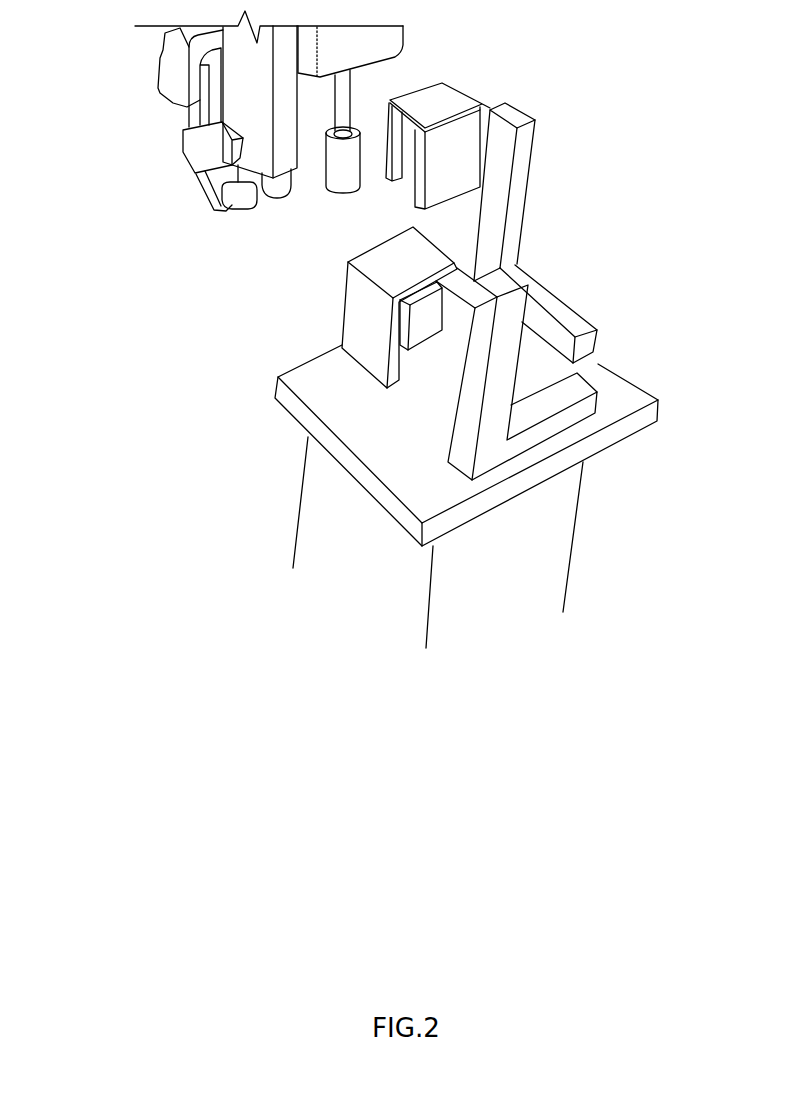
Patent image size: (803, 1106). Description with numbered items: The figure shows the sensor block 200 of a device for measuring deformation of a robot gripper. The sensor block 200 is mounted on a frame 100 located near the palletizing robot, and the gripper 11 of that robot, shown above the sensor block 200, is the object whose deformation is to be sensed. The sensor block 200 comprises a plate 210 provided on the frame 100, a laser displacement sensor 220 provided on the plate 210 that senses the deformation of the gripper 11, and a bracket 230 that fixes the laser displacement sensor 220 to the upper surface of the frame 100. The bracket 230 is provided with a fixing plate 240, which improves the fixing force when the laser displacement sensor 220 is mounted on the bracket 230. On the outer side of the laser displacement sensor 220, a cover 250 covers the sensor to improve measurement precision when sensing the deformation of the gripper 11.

The gripper 11 is at (155, 63).
The frame 100 is at (565, 522).
The sensor block 200 is at (197, 345).
The plate 210 is at (325, 402).
The laser displacement sensor 220 is at (420, 328).
The bracket 230 is at (465, 430).
The fixing plate 240 is at (460, 320).
The cover 250 is at (355, 300).